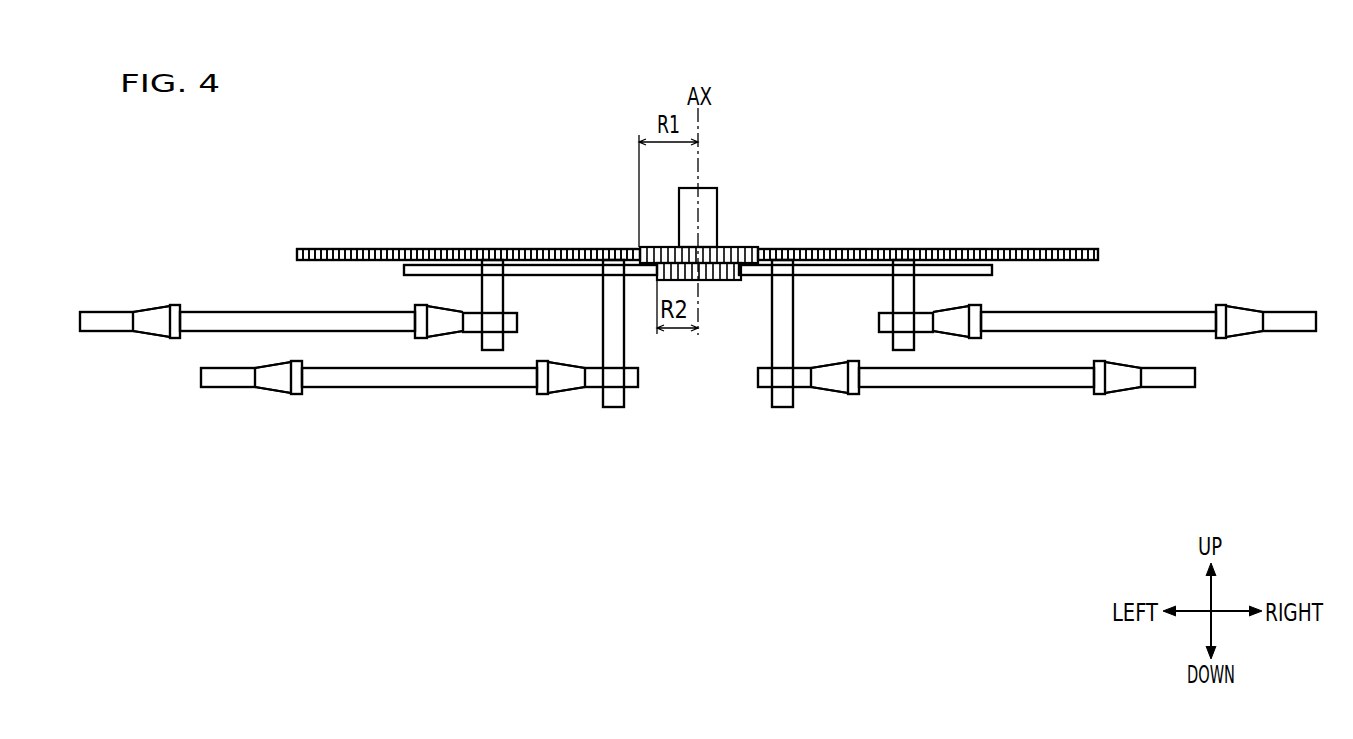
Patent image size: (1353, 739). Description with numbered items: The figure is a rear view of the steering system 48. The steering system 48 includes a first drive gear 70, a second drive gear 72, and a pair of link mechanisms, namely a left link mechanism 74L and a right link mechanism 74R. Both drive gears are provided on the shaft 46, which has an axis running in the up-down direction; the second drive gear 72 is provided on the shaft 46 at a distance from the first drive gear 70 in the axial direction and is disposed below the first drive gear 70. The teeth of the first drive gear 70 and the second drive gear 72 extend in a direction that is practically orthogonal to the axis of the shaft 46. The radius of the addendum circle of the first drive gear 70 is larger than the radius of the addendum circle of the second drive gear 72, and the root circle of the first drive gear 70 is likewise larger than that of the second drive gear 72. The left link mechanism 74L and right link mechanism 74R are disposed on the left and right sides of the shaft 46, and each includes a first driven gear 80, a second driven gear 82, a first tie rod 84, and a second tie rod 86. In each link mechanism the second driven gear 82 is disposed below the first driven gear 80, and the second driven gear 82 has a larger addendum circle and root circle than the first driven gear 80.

The shaft 46 is at (711, 187).
The steering system 48 is at (877, 128).
The first drive gear 70 is at (792, 221).
The second drive gear 72 is at (714, 281).
The left link mechanism 74L is at (359, 179).
The right link mechanism 74R is at (1038, 179).
The first driven gear 80 is at (355, 249).
The second driven gear 82 is at (404, 271).
The first tie rod 84 is at (218, 320).
The second tie rod 86 is at (372, 384).